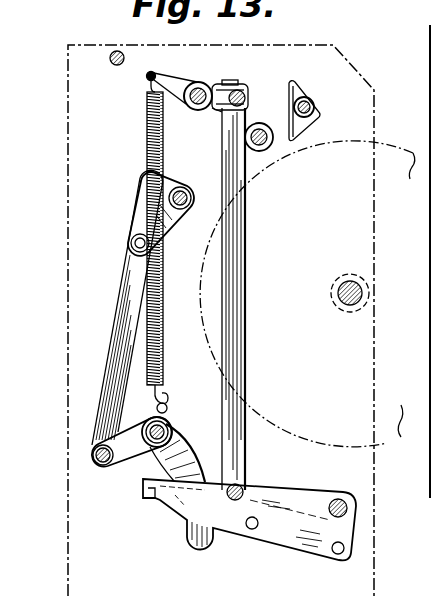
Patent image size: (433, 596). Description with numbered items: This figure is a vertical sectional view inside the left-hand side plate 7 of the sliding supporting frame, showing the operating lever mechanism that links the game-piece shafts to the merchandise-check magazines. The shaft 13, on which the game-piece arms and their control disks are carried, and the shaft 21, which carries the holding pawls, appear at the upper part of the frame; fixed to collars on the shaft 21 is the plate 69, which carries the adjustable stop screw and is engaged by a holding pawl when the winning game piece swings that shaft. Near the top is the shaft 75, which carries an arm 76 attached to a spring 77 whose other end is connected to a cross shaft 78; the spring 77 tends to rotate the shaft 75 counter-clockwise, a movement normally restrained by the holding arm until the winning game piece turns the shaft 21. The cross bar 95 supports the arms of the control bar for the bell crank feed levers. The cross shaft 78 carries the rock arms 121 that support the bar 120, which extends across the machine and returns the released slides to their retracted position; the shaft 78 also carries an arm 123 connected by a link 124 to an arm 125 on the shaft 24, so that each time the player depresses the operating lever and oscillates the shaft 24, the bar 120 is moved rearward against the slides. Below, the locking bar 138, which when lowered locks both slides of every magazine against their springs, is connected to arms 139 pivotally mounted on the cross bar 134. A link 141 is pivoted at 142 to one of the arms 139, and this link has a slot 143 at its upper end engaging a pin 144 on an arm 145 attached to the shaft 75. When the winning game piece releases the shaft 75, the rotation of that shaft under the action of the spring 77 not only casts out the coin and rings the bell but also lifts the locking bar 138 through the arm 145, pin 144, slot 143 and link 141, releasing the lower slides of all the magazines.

The side plate 7 is at (86, 355).
The shaft 13 is at (362, 291).
The shaft 21 is at (317, 106).
The shaft 24 is at (181, 188).
The plate 69 is at (291, 95).
The shaft 75 is at (197, 84).
The arm 76 is at (172, 87).
The spring 77 is at (147, 150).
The cross shaft 78 is at (168, 416).
The cross bar 95 is at (109, 63).
The bar 120 is at (208, 542).
The rock arm 121 is at (188, 450).
The arm 123 is at (92, 436).
The link 124 is at (130, 300).
The arm 125 is at (143, 231).
The cross bar 134 is at (349, 507).
The locking bar 138 is at (148, 502).
The arm 139 is at (293, 515).
The link 141 is at (235, 353).
The pivot 142 is at (246, 490).
The slot 143 is at (259, 124).
The pin 144 is at (234, 89).
The arm 145 is at (222, 111).